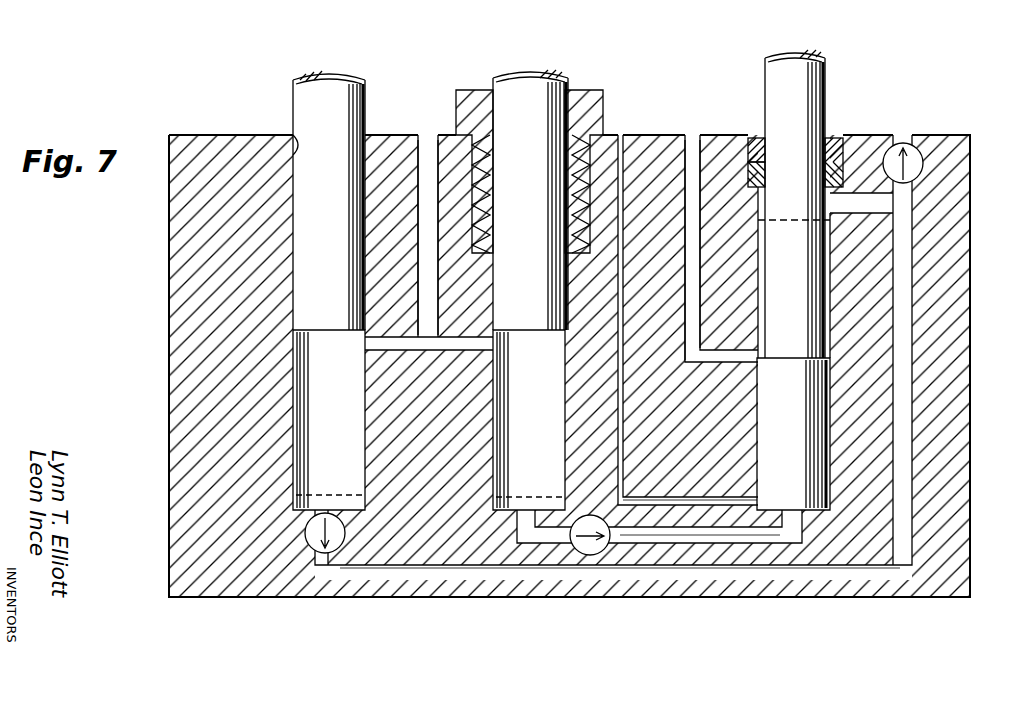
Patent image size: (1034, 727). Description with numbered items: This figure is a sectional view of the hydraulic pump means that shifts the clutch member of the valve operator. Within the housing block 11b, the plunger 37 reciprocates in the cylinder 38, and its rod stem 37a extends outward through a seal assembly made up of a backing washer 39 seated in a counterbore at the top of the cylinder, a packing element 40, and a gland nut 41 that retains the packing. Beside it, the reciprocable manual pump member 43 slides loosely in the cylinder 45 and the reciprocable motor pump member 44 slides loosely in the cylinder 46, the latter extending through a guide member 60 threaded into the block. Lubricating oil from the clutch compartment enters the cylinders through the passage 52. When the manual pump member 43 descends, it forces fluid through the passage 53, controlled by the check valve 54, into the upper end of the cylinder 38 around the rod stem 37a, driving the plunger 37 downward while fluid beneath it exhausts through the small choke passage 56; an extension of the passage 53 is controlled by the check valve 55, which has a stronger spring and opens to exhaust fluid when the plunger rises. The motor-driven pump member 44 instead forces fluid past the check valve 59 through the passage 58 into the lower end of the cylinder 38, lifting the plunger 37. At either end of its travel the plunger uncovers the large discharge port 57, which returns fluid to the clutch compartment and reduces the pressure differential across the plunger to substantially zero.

The housing block 11b is at (868, 596).
The guide member 60 is at (590, 92).
The manual pump member 43 is at (300, 106).
The manual pump cylinder 45 is at (298, 142).
The passage 52 is at (430, 135).
The motor pump member 44 is at (497, 92).
The power pump cylinder 46 is at (482, 290).
The discharge port 57 is at (692, 136).
The rod stem 37a is at (772, 90).
The plunger 37 is at (793, 434).
The gland nut 41 is at (755, 140).
The backing washer 39 is at (755, 185).
The packing element 40 is at (845, 160).
The cylinder 38 is at (830, 290).
The check valve 55 is at (915, 148).
The check valve 54 is at (330, 555).
The passage 53 is at (450, 568).
The check valve 59 is at (598, 556).
The passage 58 is at (690, 545).
The choke passage 56 is at (720, 500).